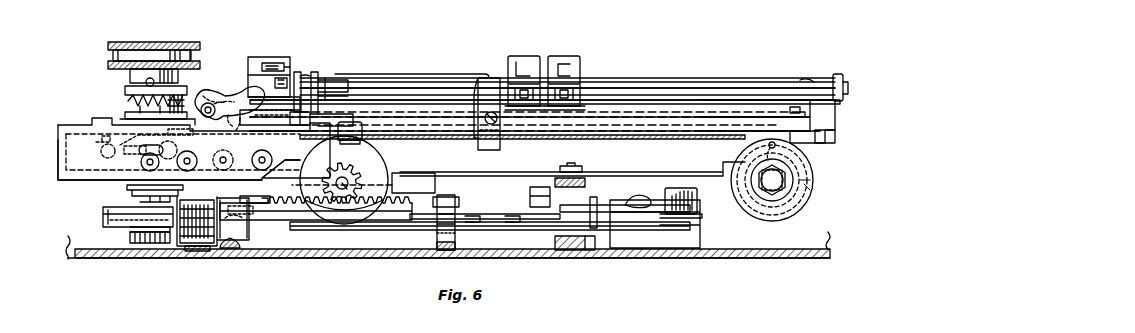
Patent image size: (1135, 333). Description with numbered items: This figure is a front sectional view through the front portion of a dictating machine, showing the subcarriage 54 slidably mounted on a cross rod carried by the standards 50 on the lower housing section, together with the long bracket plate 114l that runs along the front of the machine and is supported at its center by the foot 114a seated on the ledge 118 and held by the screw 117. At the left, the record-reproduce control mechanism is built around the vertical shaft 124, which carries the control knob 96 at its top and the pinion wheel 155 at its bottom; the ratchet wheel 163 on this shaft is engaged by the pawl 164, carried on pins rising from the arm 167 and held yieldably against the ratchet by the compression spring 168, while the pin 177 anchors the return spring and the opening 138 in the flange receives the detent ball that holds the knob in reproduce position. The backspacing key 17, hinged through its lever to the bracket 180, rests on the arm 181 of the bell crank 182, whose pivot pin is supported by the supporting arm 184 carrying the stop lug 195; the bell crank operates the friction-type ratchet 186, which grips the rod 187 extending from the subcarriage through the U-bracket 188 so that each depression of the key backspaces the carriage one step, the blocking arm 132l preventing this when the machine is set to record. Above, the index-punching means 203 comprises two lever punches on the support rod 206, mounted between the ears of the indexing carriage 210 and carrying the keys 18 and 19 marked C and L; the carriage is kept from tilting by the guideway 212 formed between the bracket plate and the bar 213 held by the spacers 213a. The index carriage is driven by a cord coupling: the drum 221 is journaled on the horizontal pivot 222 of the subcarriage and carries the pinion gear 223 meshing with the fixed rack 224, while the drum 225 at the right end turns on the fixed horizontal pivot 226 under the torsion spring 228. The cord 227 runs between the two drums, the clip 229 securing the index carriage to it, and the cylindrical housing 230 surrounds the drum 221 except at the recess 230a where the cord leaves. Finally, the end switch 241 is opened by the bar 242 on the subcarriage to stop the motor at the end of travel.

The backspacing key 17 is at (290, 64).
The key 18 is at (563, 56).
The key 19 is at (526, 56).
The standards 50 is at (655, 221).
The subcarriage 54 is at (557, 237).
The control knob 96 is at (108, 46).
The foot 114a is at (708, 170).
The frame side plate 114l is at (550, 157).
The screw 117 is at (582, 166).
The ledge 118 is at (582, 233).
The shaft 124 is at (132, 194).
The frame extension 132l is at (281, 172).
The opening 138 is at (85, 181).
The pinion wheel 155 is at (143, 244).
The ratchet wheel 163 is at (125, 88).
The pawl 164 is at (210, 85).
The arm 167 is at (130, 116).
The compression spring 168 is at (130, 99).
The pin 177 is at (144, 150).
The bracket 180 is at (302, 74).
The arm 181 is at (265, 95).
The bell crank 182 is at (228, 85).
The supporting arm 184 is at (286, 184).
The friction-type ratchet 186 is at (246, 242).
The rod 187 is at (118, 227).
The U-bracket 188 is at (190, 246).
The stop lug 195 is at (318, 94).
The index-punching means 203 is at (607, 66).
The support rod 206 is at (768, 88).
The indexing carriage 210 is at (606, 105).
The guideway 212 is at (700, 116).
The bar 213 is at (708, 104).
The spacers 213a is at (812, 131).
The drum 221 is at (323, 204).
The horizontal pivot 222 is at (345, 189).
The pinion gear 223 is at (365, 141).
The rack 224 is at (425, 215).
The drum 225 is at (754, 219).
The horizontal pivot 226 is at (770, 184).
The cord 227 is at (725, 134).
The torsion spring 228 is at (812, 66).
The clip 229 is at (488, 77).
The cylindrical housing 230 is at (363, 183).
The recess 230a is at (355, 116).
The end switch 241 is at (669, 190).
The bar 242 is at (564, 250).